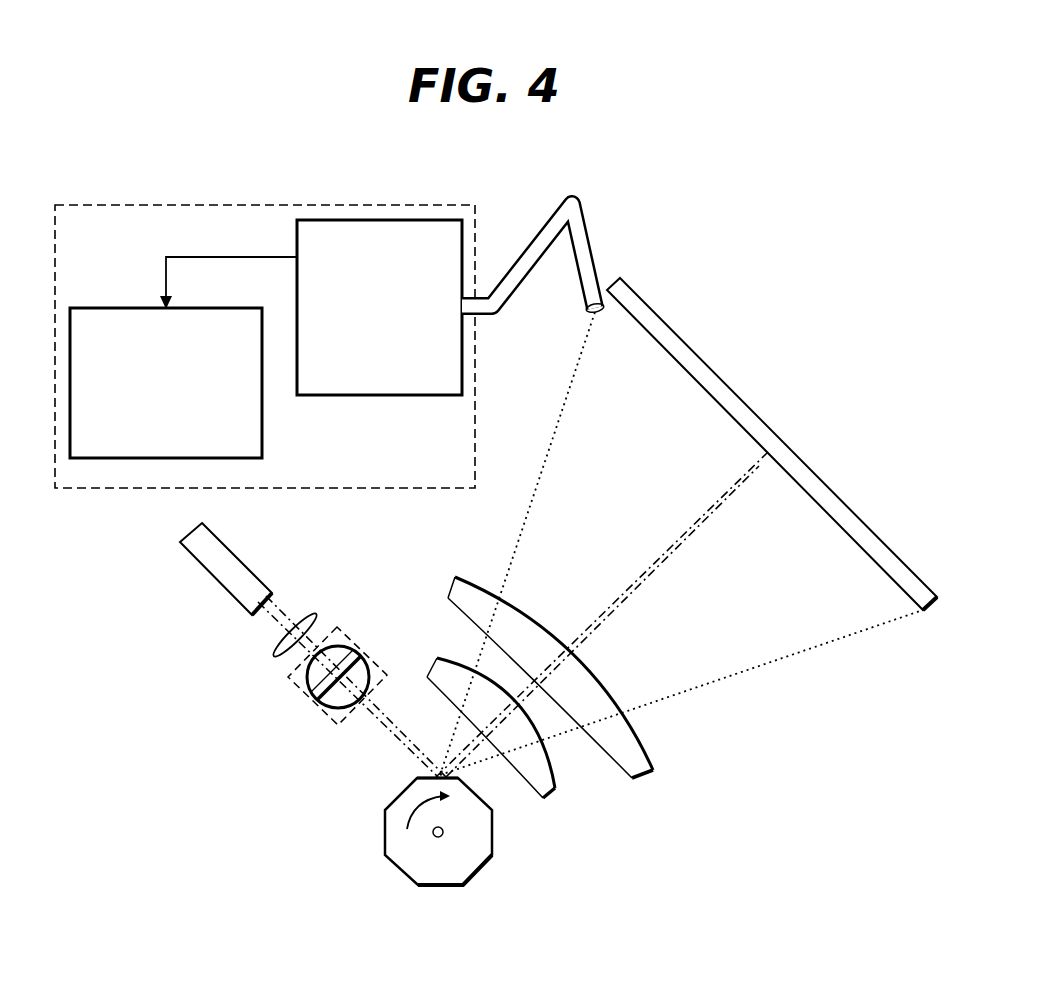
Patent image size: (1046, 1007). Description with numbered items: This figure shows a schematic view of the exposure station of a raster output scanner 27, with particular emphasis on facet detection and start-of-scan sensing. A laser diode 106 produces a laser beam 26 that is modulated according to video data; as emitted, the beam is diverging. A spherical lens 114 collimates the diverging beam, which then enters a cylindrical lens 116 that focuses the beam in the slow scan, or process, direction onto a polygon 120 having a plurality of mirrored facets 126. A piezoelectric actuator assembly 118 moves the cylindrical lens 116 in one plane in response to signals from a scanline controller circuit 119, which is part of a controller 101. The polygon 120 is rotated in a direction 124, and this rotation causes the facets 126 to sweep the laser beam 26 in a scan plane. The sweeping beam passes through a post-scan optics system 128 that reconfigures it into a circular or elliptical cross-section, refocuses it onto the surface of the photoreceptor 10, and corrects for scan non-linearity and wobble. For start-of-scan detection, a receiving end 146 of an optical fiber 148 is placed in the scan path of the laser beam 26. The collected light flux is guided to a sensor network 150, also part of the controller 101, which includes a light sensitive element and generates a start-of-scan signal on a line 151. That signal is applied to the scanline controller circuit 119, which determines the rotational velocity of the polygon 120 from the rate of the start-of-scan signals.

The photoreceptor 10 is at (722, 385).
The laser beam 26 is at (666, 553).
The raster output scanner 27 is at (661, 891).
The controller 101 is at (240, 204).
The laser diode 106 is at (222, 554).
The spherical lens 114 is at (313, 618).
The cylindrical lens 116 is at (318, 698).
The piezoelectric actuator assembly 118 is at (384, 664).
The scanline controller circuit 119 is at (262, 425).
The polygon 120 is at (462, 862).
The direction 124 is at (408, 823).
The mirrored facets 126 is at (418, 776).
The post-scan optics system 128 is at (662, 791).
The receiving end 146 is at (588, 308).
The optical fiber 148 is at (518, 252).
The sensor network 150 is at (377, 396).
The line 151 is at (165, 266).